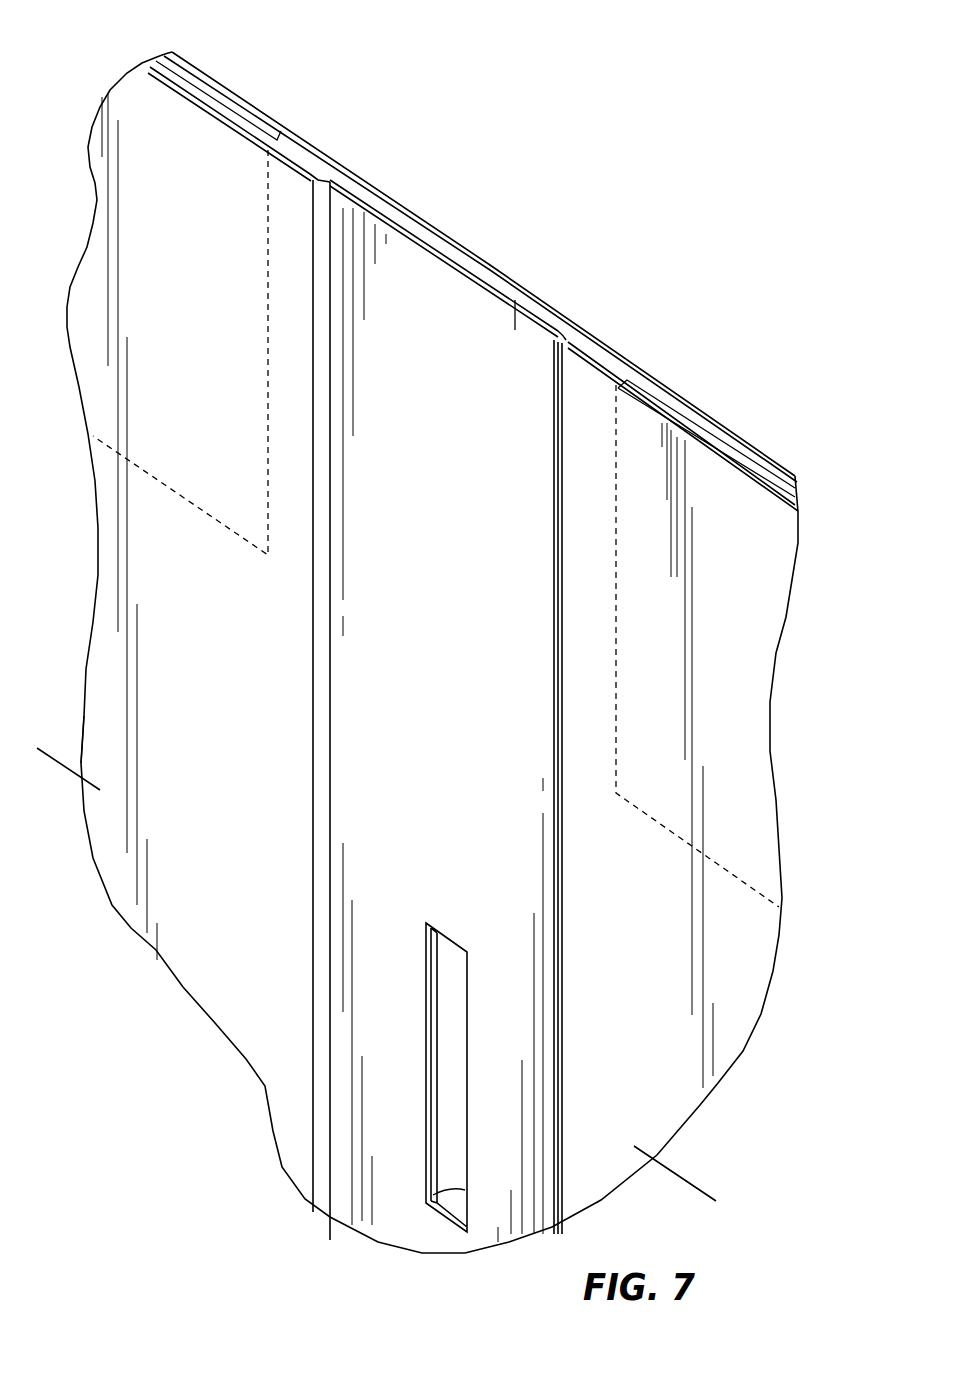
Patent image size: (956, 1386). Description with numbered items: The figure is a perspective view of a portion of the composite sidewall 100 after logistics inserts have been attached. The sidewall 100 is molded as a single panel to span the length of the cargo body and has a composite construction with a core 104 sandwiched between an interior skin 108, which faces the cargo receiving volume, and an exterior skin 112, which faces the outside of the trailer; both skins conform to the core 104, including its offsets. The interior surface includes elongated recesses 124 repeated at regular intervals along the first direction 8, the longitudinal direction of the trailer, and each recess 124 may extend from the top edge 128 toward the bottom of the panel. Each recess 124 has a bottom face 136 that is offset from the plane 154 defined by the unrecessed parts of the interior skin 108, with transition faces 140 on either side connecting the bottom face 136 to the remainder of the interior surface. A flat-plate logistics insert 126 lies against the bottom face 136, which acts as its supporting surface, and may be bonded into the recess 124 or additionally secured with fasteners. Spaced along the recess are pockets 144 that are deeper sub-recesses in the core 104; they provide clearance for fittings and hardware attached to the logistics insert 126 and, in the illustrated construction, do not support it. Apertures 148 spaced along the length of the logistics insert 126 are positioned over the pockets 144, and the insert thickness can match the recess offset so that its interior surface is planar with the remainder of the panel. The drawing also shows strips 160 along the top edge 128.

The sidewall 100 is at (657, 183).
The core 104 is at (292, 152).
The interior skin 108 is at (600, 395).
The exterior skin 112 is at (683, 400).
The recess 124 is at (477, 278).
The logistics insert 126 is at (519, 368).
The top edge 128 is at (373, 181).
The bottom face 136 is at (432, 243).
The transition face 140 is at (323, 175).
The pocket 144 is at (457, 1171).
The aperture 148 is at (427, 1122).
The plane 154 is at (181, 896).
The strip 160 is at (232, 113).
The first direction 8 is at (52, 754).